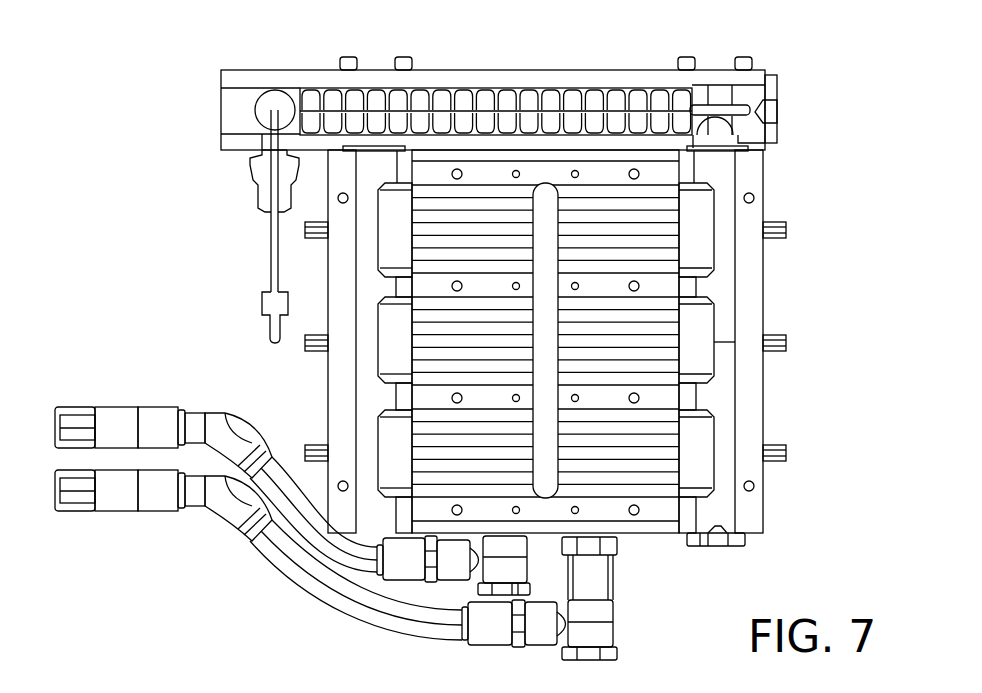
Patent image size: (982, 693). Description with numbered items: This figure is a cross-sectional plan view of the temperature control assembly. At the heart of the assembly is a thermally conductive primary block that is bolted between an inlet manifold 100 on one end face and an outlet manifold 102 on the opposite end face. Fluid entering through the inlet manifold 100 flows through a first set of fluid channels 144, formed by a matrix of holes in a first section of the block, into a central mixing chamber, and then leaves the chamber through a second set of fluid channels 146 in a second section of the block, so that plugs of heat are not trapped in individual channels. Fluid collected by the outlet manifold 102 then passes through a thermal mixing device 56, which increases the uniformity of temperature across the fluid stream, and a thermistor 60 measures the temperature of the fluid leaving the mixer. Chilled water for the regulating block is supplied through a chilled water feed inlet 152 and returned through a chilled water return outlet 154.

The thermal mixing device 56 is at (380, 98).
The thermistor 60 is at (272, 246).
The inlet manifold 100 is at (335, 390).
The outlet manifold 102 is at (748, 384).
The first set of fluid channels 144 is at (453, 473).
The second set of fluid channels 146 is at (643, 463).
The chilled water feed inlet 152 is at (68, 494).
The chilled water return outlet 154 is at (76, 424).